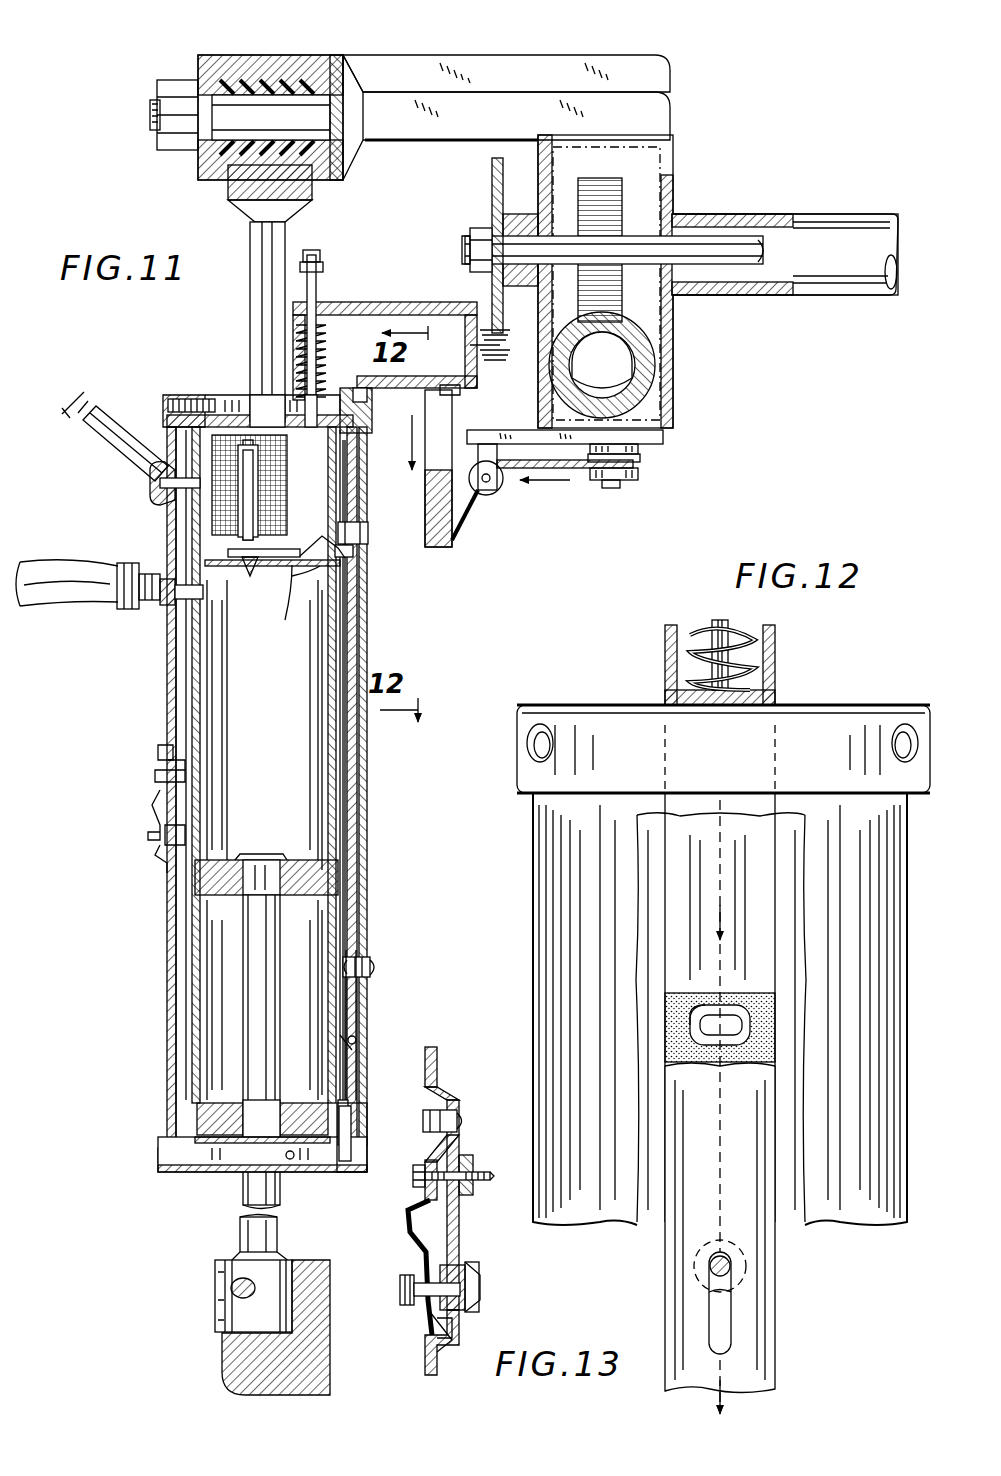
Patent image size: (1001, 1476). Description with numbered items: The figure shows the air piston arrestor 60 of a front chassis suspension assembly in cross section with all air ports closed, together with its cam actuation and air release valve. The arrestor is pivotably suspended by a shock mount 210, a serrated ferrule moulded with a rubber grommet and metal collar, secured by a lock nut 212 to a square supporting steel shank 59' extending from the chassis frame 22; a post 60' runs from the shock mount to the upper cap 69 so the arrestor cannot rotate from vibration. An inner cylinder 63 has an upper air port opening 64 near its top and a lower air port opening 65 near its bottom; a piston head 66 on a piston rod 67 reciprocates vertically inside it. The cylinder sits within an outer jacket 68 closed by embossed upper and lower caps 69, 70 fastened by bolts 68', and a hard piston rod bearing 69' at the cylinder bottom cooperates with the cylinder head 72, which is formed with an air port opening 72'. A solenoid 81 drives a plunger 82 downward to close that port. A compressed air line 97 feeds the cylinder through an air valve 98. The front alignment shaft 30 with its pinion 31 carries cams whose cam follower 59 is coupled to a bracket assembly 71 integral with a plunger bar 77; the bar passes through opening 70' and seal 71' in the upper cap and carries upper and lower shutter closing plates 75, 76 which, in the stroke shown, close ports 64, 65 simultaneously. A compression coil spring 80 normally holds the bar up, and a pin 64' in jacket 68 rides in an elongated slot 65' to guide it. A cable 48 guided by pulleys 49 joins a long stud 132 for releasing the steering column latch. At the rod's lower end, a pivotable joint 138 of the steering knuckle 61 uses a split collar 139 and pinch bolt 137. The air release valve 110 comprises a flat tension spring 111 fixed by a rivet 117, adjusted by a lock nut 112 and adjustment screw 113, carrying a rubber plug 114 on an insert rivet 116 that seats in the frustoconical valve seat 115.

In FIG. 11, the shock mount 210 is at (220, 52).
In FIG. 11, the lock nut 212 is at (175, 82).
In FIG. 11, the supporting steel shank 59' is at (506, 103).
In FIG. 11, the pinion 31 is at (603, 182).
In FIG. 11, the front alignment shaft 30 is at (636, 246).
In FIG. 11, the chassis frame 22 is at (672, 410).
In FIG. 11, the bracket assembly 71 is at (385, 333).
In FIG. 11, the post 60' is at (241, 381).
In FIG. 11, the compression coil spring 80 is at (326, 360).
In FIG. 12, the compression coil spring 80 is at (745, 640).
In FIG. 11, the seal 71' is at (330, 332).
In FIG. 11, the opening 70' is at (379, 410).
In FIG. 11, the stud 132 is at (452, 414).
In FIG. 11, the cam follower 59 is at (500, 365).
In FIG. 11, the upper cap 69 is at (250, 394).
In FIG. 12, the upper cap 69 is at (723, 731).
In FIG. 11, the bolts 68' is at (133, 782).
In FIG. 12, the bolts 68' is at (548, 716).
In FIG. 11, the electro-magnetic solenoid 81 is at (290, 500).
In FIG. 11, the upper shutter closing plate 75 is at (356, 530).
In FIG. 12, the upper shutter closing plate 75 is at (690, 1000).
In FIG. 11, the pulleys 49 is at (493, 495).
In FIG. 11, the cable 48 is at (578, 470).
In FIG. 11, the plunger 82 is at (228, 550).
In FIG. 11, the upper air port opening 64 is at (372, 567).
In FIG. 12, the upper air port opening 64 is at (675, 1025).
In FIG. 11, the air port opening 72' is at (272, 588).
In FIG. 11, the cylinder head 72 is at (290, 618).
In FIG. 11, the compressed air line 97 is at (58, 600).
In FIG. 11, the air valve 98 is at (146, 612).
In FIG. 11, the outer jacket 68 is at (293, 786).
In FIG. 12, the outer jacket 68 is at (648, 973).
In FIG. 13, the outer jacket 68 is at (452, 1211).
In FIG. 11, the inner cylinder 63 is at (338, 648).
In FIG. 11, the plunger bar 77 is at (346, 748).
In FIG. 12, the plunger bar 77 is at (776, 1242).
In FIG. 11, the air piston arrestor 60 is at (292, 786).
In FIG. 12, the air piston arrestor 60 is at (696, 1009).
In FIG. 11, the piston head 66 is at (225, 860).
In FIG. 11, the pin 64' is at (383, 965).
In FIG. 12, the pin 64' is at (755, 1266).
In FIG. 11, the elongated slot 65' is at (381, 1025).
In FIG. 12, the elongated slot 65' is at (770, 1303).
In FIG. 11, the lower shutter closing plate 76 is at (355, 1058).
In FIG. 11, the piston rod bearing 69' is at (239, 1107).
In FIG. 11, the lower air port opening 65 is at (315, 1107).
In FIG. 11, the piston rod 67 is at (281, 1192).
In FIG. 11, the lower cap 70 is at (352, 1158).
In FIG. 11, the steering knuckle 61 is at (292, 1258).
In FIG. 11, the pinch bolt 137 is at (232, 1290).
In FIG. 11, the split collar 139 is at (215, 1312).
In FIG. 11, the pivotable joint 138 is at (208, 1365).
In FIG. 13, the rivet 117 is at (464, 1116).
In FIG. 13, the adjustment screw 113 is at (418, 1163).
In FIG. 13, the lock nut 112 is at (472, 1158).
In FIG. 13, the tension spring 111 is at (412, 1228).
In FIG. 13, the valve seat 115 is at (472, 1265).
In FIG. 13, the insert rivet 116 is at (402, 1288).
In FIG. 13, the air release valve 110 is at (484, 1285).
In FIG. 13, the rubber plug 114 is at (436, 1326).